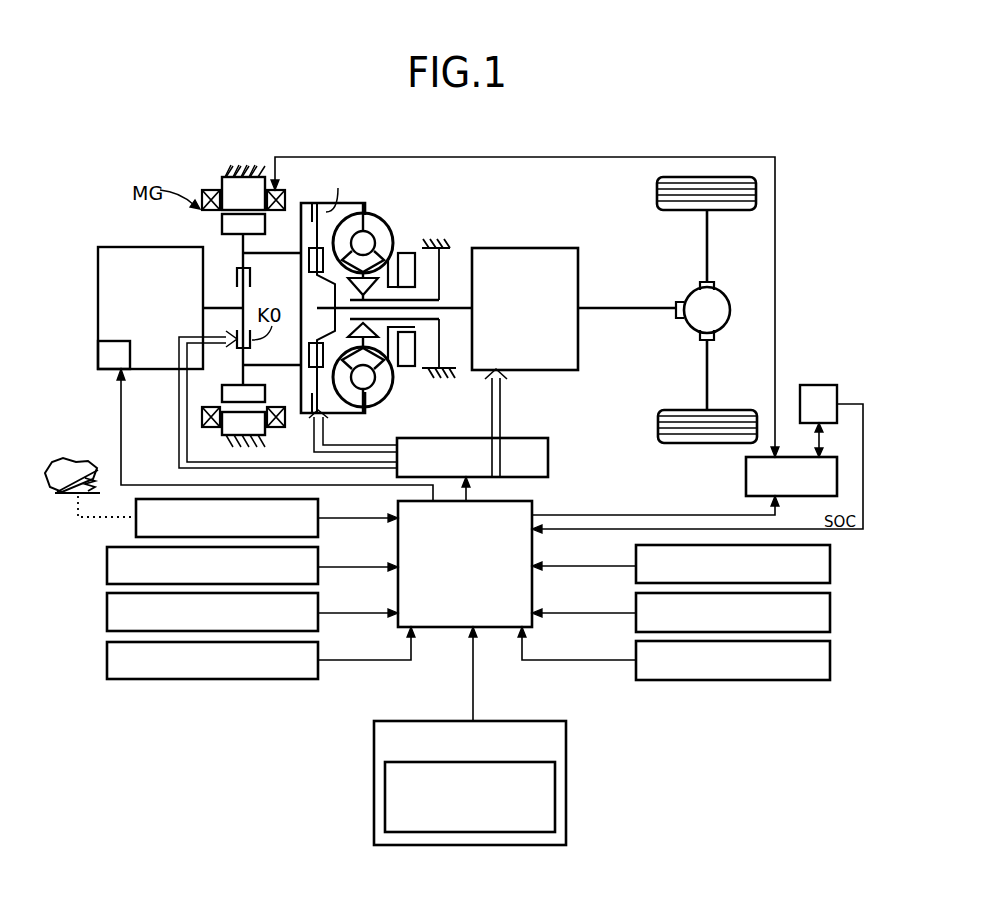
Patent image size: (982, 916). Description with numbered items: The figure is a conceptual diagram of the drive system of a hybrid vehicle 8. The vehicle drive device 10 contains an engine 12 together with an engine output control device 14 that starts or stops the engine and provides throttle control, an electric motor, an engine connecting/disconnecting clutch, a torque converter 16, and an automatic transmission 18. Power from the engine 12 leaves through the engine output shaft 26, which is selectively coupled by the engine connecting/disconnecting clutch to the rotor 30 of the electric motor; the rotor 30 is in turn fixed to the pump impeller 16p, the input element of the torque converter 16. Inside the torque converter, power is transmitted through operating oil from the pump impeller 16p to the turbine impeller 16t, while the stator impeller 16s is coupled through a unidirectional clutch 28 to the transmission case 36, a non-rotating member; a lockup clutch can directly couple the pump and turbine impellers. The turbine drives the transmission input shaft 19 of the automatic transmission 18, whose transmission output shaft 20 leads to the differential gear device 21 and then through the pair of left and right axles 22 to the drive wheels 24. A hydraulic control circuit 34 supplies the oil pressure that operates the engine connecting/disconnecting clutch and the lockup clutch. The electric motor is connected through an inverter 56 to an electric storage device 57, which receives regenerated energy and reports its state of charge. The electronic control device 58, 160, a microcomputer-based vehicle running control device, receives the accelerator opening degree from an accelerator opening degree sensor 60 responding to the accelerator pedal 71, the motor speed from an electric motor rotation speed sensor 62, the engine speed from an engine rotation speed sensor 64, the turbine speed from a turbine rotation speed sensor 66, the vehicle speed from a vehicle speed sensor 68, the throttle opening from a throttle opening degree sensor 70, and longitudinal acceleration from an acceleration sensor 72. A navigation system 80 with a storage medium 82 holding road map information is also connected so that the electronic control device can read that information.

The hybrid vehicle 8 is at (851, 148).
The vehicle drive device 10 is at (114, 180).
The engine 12 is at (119, 248).
The engine output control device 14 is at (102, 350).
The torque converter 16 is at (378, 306).
The pump impeller 16p is at (380, 383).
The turbine impeller 16t is at (347, 394).
The stator impeller 16s is at (378, 347).
The automatic transmission 18 is at (578, 233).
The transmission input shaft 19 is at (462, 308).
The transmission output shaft 20 is at (592, 308).
The differential gear device 21 is at (721, 296).
The axles 22 is at (707, 243).
The drive wheels 24 is at (657, 192).
The engine output shaft 26 is at (224, 306).
The one-way clutch 28 is at (410, 253).
The rotor 30 is at (222, 225).
The hydraulic control circuit 34 is at (548, 448).
The transmission case 36 is at (246, 166).
The inverter 56 is at (746, 466).
The electric storage device 57 is at (817, 392).
The electronic control device 58 is at (360, 498).
The electronic control device 160 is at (522, 506).
The accelerator opening degree sensor 60 is at (136, 528).
The electric motor rotation speed sensor 62 is at (107, 565).
The engine rotation speed sensor 64 is at (107, 611).
The turbine rotation speed sensor 66 is at (107, 660).
The vehicle speed sensor 68 is at (830, 560).
The throttle opening degree sensor 70 is at (830, 606).
The accelerator pedal 71 is at (98, 466).
The acceleration sensor 72 is at (830, 662).
The navigation system 80 is at (549, 725).
The storage medium 82 is at (548, 776).